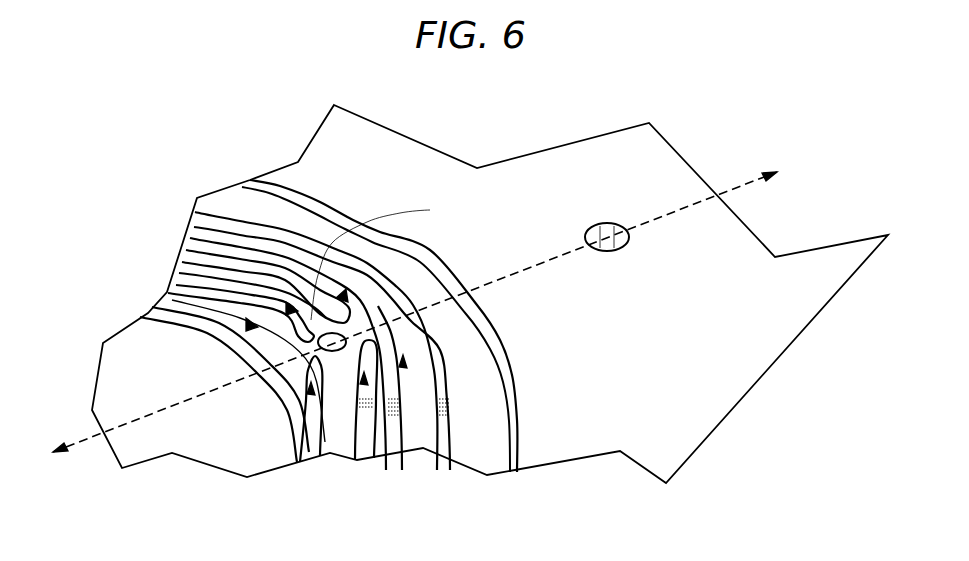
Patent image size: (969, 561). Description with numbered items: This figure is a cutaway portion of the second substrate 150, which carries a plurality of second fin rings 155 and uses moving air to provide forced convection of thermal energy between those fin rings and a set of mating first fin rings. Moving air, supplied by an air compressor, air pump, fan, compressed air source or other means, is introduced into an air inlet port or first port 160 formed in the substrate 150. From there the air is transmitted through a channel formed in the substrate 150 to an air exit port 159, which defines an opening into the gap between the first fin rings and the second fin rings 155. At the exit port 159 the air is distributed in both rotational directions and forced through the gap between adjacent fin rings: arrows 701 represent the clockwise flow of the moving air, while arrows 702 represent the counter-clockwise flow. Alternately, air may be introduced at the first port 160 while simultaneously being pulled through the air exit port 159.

The second substrate 150 is at (617, 188).
The second fin rings 155 is at (490, 445).
The air exit port 159 is at (348, 338).
The first port 160 is at (630, 238).
The arrows 701 is at (418, 346).
The arrows 702 is at (372, 222).